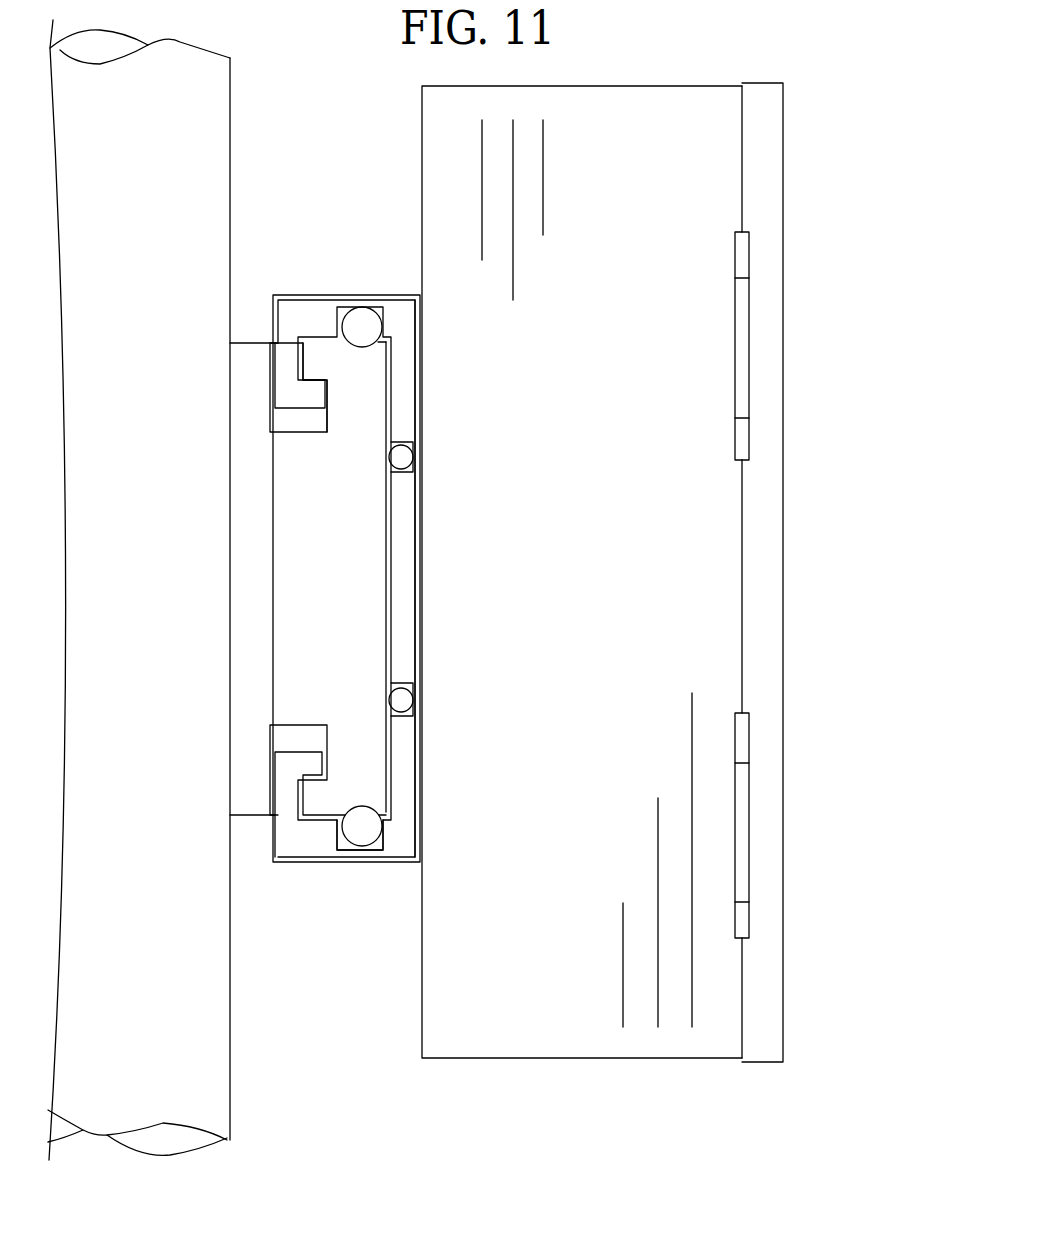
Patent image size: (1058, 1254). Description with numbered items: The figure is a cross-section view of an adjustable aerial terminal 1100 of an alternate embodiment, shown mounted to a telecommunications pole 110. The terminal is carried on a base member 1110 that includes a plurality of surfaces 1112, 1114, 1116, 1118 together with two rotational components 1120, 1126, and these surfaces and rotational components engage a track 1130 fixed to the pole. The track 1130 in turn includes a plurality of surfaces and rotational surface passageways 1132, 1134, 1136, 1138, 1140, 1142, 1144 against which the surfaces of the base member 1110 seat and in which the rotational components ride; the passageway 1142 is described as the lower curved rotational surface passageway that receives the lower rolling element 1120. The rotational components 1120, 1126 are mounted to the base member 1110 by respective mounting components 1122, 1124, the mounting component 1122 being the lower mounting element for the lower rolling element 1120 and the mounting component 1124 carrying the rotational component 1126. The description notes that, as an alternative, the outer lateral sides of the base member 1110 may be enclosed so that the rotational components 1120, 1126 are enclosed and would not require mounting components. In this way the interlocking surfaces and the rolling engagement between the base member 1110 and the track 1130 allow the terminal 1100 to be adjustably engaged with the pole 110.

The telecommunications pole 110 is at (226, 1150).
The adjustable aerial terminal 1100 is at (782, 176).
The base member 1110 is at (340, 948).
The surface 1112 is at (290, 752).
The surface 1114 is at (268, 832).
The surface 1116 is at (297, 864).
The surface 1118 is at (413, 800).
The rotational component 1120 is at (357, 832).
The mounting component 1122 is at (384, 833).
The mounting component 1124 is at (398, 716).
The rotational component 1126 is at (403, 702).
The track 1130 is at (246, 326).
The surface 1132 is at (258, 340).
The surface 1134 is at (270, 425).
The surface 1136 is at (307, 432).
The surface 1138 is at (328, 413).
The surface 1140 is at (303, 355).
The lower curved rotational surface passageway 1142 is at (362, 349).
The rotational surface passageway 1144 is at (386, 596).